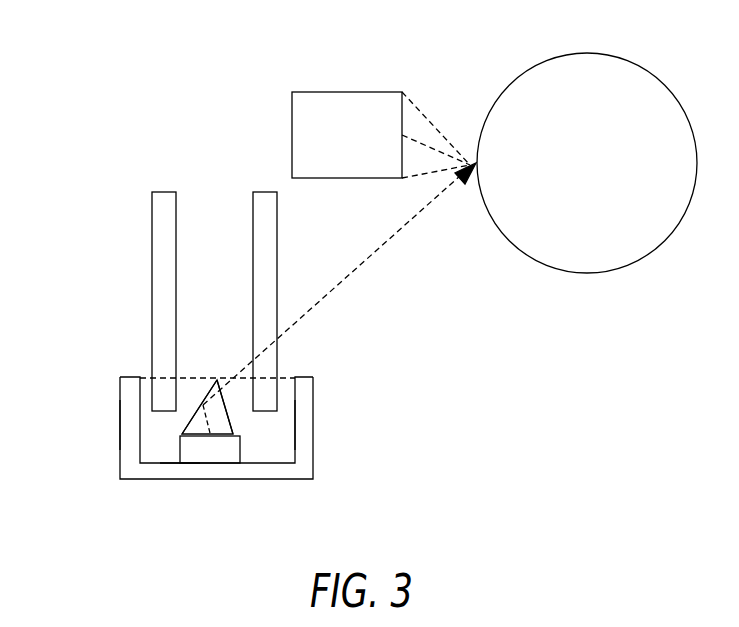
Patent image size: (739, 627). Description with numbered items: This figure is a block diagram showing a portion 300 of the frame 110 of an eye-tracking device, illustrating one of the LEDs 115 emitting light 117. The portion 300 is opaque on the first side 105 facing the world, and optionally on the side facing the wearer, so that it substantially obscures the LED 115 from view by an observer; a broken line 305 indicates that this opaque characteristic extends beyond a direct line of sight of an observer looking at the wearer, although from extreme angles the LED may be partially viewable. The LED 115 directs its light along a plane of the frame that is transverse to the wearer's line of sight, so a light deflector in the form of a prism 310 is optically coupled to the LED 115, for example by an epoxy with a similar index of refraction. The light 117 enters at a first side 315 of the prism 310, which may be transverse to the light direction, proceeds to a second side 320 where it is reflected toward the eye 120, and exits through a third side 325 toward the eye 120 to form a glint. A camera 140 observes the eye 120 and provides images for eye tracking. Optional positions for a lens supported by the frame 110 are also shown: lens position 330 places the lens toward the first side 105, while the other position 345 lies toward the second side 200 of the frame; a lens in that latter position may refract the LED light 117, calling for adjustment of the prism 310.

The eye 120 is at (586, 53).
The camera 140 is at (336, 92).
The light 117 is at (368, 262).
The frame 110 is at (160, 479).
The portion of the frame 300 is at (120, 381).
The first side 105 is at (120, 424).
The second side 200 is at (313, 385).
The LED 115 is at (180, 448).
The lens position 330 is at (152, 214).
The second pillar 345 is at (253, 217).
The first side of the prism 315 is at (218, 440).
The prism 310 is at (220, 418).
The broken line 305 is at (224, 377).
The second side of the prism 320 is at (186, 412).
The third side of the prism 325 is at (203, 422).